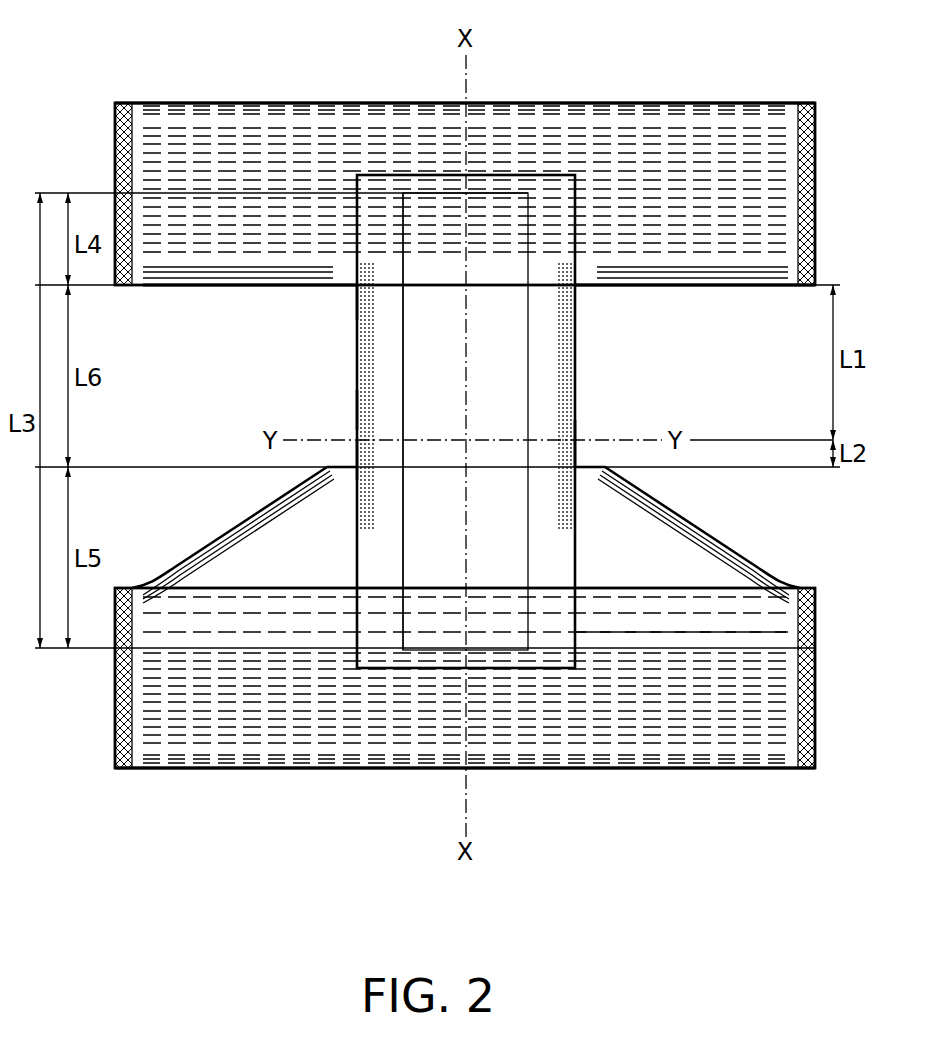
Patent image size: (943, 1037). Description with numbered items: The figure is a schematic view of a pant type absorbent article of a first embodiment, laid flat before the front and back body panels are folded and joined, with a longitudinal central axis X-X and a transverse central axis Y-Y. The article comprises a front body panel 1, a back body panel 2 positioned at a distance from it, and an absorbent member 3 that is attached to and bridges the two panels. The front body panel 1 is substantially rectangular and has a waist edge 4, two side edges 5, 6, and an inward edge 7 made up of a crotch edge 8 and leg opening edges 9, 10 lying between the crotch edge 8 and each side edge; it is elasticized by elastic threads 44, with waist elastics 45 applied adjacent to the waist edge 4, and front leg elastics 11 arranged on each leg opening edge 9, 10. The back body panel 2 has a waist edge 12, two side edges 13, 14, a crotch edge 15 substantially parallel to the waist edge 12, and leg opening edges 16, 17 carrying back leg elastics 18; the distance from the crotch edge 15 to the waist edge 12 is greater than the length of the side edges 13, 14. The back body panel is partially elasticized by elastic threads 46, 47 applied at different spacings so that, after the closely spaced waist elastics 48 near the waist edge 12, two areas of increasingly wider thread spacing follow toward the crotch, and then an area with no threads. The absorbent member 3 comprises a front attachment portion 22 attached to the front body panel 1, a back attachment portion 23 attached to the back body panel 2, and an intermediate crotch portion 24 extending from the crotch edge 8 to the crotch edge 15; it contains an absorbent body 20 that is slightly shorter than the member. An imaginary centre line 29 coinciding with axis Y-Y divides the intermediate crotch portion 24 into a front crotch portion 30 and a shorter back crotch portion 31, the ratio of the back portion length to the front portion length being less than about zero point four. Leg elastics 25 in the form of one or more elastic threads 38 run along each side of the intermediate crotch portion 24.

The front body panel 1 is at (297, 150).
The back body panel 2 is at (240, 768).
The absorbent member 3 is at (540, 355).
The waist edge 4 is at (372, 103).
The side edge 5 is at (815, 103).
The side edge 6 is at (115, 103).
The inward edge 7 is at (780, 285).
The crotch edge 8 is at (497, 287).
The leg opening edge 9 is at (703, 285).
The leg opening edge 10 is at (225, 285).
The front leg elastics 11 is at (165, 277).
The waist edge 12 is at (405, 768).
The side edge 13 is at (820, 735).
The side edge 14 is at (112, 765).
The crotch edge 15 is at (590, 462).
The leg opening edge 16 is at (760, 567).
The leg opening edge 17 is at (228, 527).
The back leg elastics 18 is at (705, 535).
The absorbent body 20 is at (430, 357).
The front attachment portion 22 is at (555, 190).
The back attachment portion 23 is at (390, 545).
The intermediate crotch portion 24 is at (395, 388).
The leg elastics 25 is at (560, 378).
The imaginary centre line 29 is at (625, 440).
The front crotch portion 30 is at (357, 300).
The back crotch portion 31 is at (357, 463).
The elastic threads 38 is at (357, 410).
The elastic threads 44 is at (692, 128).
The waist elastics 45 is at (632, 103).
The elastic threads 46 is at (697, 728).
The elastic threads 47 is at (591, 632).
The waist elastics 48 is at (528, 768).